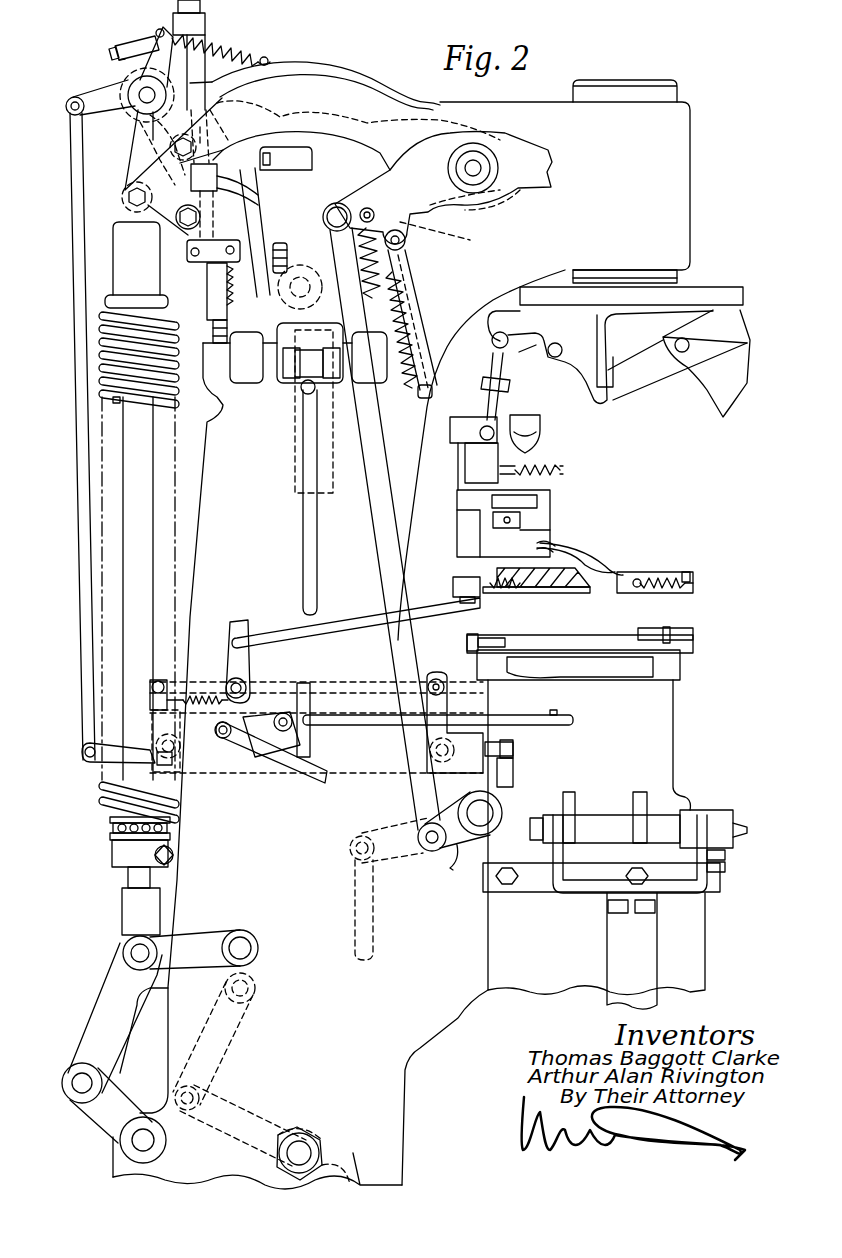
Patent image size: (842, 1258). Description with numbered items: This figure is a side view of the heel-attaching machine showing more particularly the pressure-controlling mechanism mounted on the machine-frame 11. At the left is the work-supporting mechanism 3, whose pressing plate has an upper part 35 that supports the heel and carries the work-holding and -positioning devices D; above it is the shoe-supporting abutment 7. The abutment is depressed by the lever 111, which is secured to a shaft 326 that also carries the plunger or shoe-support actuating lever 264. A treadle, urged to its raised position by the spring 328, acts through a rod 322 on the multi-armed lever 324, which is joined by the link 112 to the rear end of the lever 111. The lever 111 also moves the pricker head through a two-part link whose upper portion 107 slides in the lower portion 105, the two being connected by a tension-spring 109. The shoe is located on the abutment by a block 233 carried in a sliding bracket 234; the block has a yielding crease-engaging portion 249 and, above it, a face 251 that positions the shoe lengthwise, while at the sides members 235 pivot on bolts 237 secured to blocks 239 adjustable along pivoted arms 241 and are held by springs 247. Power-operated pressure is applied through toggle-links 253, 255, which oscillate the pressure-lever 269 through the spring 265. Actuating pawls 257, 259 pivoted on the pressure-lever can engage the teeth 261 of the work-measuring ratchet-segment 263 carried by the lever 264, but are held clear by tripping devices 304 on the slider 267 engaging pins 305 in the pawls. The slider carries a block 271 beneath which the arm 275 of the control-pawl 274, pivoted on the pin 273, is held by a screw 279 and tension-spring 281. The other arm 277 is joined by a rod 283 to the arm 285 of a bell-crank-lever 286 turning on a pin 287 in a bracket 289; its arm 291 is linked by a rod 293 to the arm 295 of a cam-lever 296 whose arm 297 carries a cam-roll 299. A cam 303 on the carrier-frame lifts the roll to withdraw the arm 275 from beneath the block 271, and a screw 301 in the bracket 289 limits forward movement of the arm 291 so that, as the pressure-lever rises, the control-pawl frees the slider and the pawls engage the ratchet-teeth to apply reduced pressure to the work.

The left-hand work-supporting mechanism 3 is at (674, 748).
The shoe-supporting abutment 7 is at (718, 394).
The machine-frame 11 is at (213, 443).
The upper part of pressing plate 35 is at (680, 658).
The lower portion of two-part link 105 is at (424, 399).
The upper portion of two-part link 107 is at (407, 263).
The tension-spring 109 is at (399, 389).
The abutment lever 111 is at (441, 203).
The link 112 is at (379, 512).
The block 233 is at (562, 568).
The bracket 234 is at (455, 513).
The crease-engaging members 235 is at (630, 595).
The bolts 237 is at (687, 573).
The blocks 239 is at (694, 584).
The pivoted arms 241 is at (614, 570).
The springs 247 is at (670, 595).
The crease-engaging portion 249 is at (571, 594).
The face 251 is at (592, 567).
The toggle-link 253 is at (102, 1118).
The toggle-link 255 is at (100, 1000).
The actuating pawl 257 is at (140, 128).
The actuating pawl 259 is at (135, 184).
The ratchet-teeth 261 is at (210, 290).
The work-measuring ratchet-segment 263 is at (323, 214).
The shoe-support actuating lever 264 is at (483, 247).
The spring 265 is at (103, 798).
The slider 267 is at (248, 47).
The pressure-lever 269 is at (333, 88).
The block 271 is at (196, 26).
The horizontal pin 273 is at (128, 95).
The control-pawl 274 is at (118, 55).
The upwardly extending arm 275 is at (152, 62).
The rearwardly extending arm 277 is at (80, 98).
The screw 279 is at (121, 51).
The tension-spring 281 is at (269, 60).
The rod 283 is at (82, 548).
The rearwardly extending arm 285 is at (113, 766).
The bell-crank-lever 286 is at (176, 748).
The horizontal pin 287 is at (172, 758).
The bracket 289 is at (248, 768).
The upwardly extending arm 291 is at (158, 695).
The forwardly extending rod 293 is at (330, 683).
The upwardly extending arm 295 is at (448, 697).
The cam-lever 296 is at (440, 822).
The forwardly extending arm 297 is at (481, 797).
The cam-roll 299 is at (513, 745).
The screw 301 is at (190, 694).
The cam 303 is at (513, 776).
The tripping devices 304 is at (215, 140).
The pins 305 is at (176, 148).
The rod 322 is at (355, 905).
The multi-armed lever 324 is at (400, 868).
The shaft 326 is at (477, 166).
The spring 328 is at (374, 222).
The work-holding and -positioning devices D is at (696, 634).